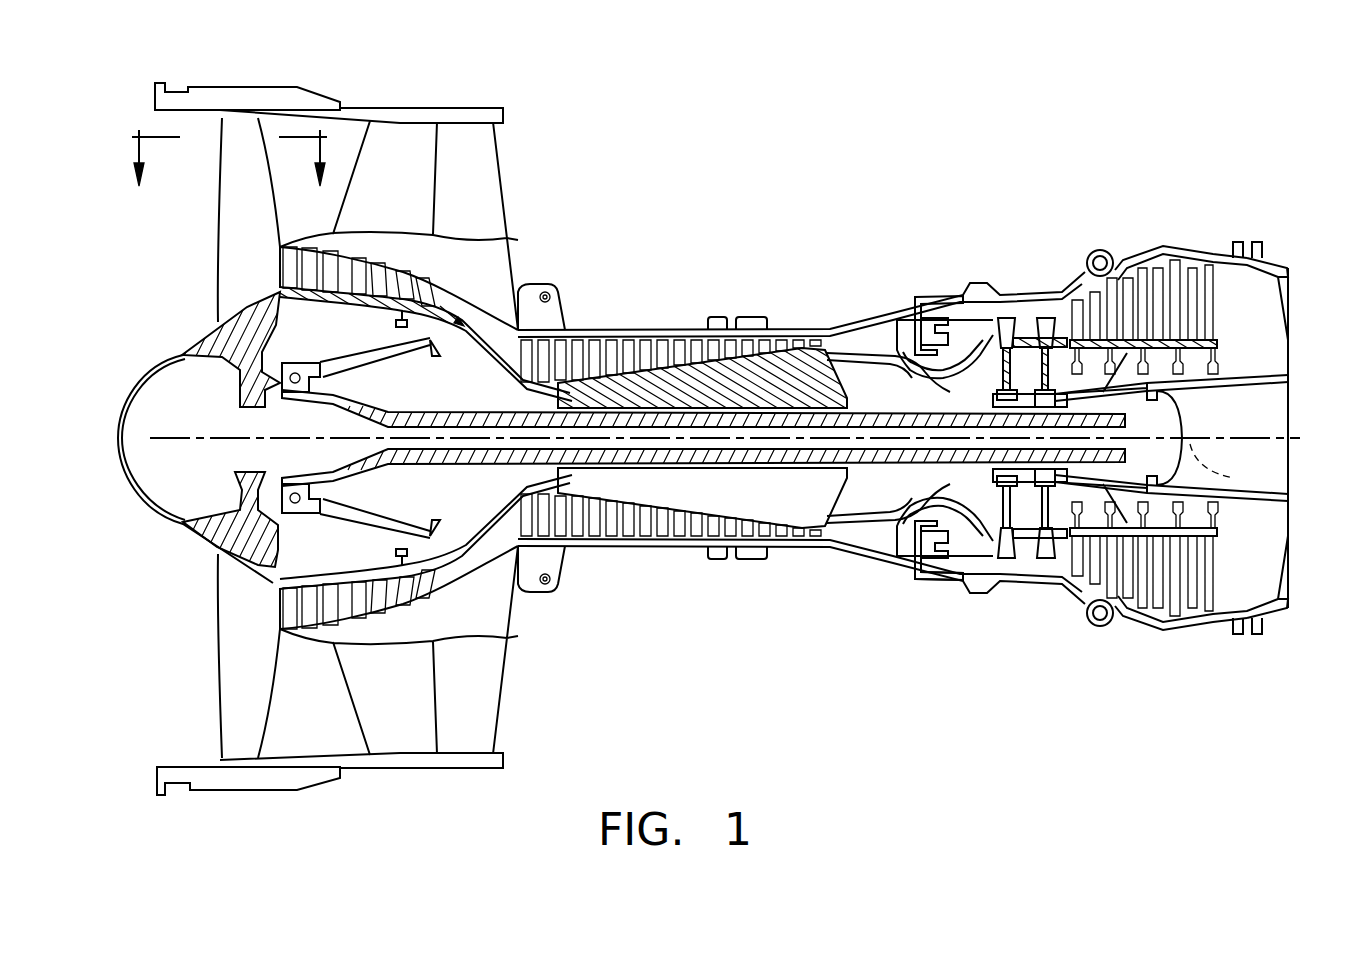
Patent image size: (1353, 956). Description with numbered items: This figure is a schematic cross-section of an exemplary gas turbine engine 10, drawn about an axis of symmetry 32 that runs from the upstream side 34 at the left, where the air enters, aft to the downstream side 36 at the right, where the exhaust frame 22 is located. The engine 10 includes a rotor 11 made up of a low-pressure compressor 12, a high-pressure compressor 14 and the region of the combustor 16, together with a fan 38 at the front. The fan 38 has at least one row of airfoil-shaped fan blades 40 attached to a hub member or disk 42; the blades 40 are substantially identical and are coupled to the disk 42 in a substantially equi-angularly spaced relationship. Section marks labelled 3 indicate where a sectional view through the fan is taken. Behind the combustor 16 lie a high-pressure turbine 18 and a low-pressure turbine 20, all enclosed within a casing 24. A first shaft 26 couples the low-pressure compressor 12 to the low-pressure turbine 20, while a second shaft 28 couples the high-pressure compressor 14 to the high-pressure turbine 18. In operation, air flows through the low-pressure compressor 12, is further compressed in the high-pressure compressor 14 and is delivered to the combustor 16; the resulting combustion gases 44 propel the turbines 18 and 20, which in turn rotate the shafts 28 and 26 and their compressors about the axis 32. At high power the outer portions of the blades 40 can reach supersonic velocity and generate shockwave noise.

The gas turbine engine 10 is at (991, 165).
The rotor 11 is at (104, 446).
The low-pressure compressor 12 is at (428, 261).
The high-pressure compressor 14 is at (633, 328).
The combustor 16 is at (947, 332).
The high-pressure turbine 18 is at (1000, 290).
The low-pressure turbine 20 is at (1126, 247).
The exhaust frame 22 is at (1283, 257).
The casing 24 is at (1213, 252).
The first shaft 26 is at (1090, 417).
The second shaft 28 is at (893, 397).
The axis of symmetry 32 is at (1235, 478).
The upstream side 34 is at (120, 338).
The downstream side 36 is at (1291, 624).
The fan 38 is at (185, 632).
The fan blades 40 is at (256, 666).
The disk 42 is at (207, 560).
The combustion gases 44 is at (977, 553).
The section line for FIG. 3 is at (233, 183).